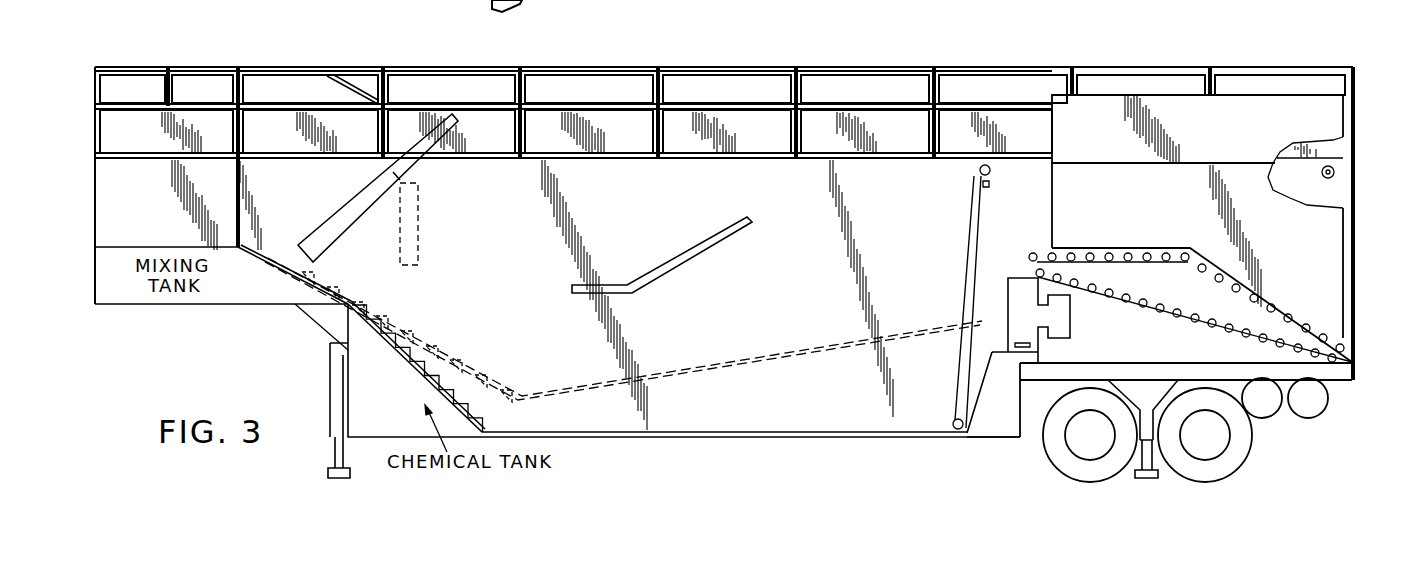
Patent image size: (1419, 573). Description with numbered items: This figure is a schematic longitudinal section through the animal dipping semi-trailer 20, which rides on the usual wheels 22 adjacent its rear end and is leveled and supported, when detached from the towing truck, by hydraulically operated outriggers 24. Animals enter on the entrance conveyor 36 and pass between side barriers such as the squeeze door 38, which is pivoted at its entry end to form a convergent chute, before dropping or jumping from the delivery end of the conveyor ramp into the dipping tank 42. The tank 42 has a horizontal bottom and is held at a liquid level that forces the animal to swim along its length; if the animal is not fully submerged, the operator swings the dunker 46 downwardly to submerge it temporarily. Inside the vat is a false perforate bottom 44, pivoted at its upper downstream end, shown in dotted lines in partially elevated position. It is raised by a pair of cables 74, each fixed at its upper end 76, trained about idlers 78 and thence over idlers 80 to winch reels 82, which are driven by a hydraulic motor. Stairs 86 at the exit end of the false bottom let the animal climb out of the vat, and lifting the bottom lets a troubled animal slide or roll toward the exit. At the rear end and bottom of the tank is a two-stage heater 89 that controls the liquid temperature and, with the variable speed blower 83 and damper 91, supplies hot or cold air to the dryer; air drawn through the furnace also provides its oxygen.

The semi-trailer 20 is at (1080, 62).
The wheels 22 is at (1070, 475).
The outriggers 24 is at (330, 407).
The entrance conveyor 36 is at (1215, 278).
The squeeze door 38 is at (1205, 215).
The dipping tank 42 is at (712, 412).
The false perforate bottom 44 is at (693, 370).
The dunker 46 is at (680, 257).
The cables 74 is at (955, 302).
The upper end 76 is at (990, 208).
The idlers 78 is at (958, 430).
The idlers 80 is at (980, 172).
The winch reels 82 is at (1335, 178).
The blower 83 is at (1073, 328).
The stairs 86 is at (430, 330).
The two-stage heater 89 is at (1010, 411).
The damper 91 is at (1022, 343).